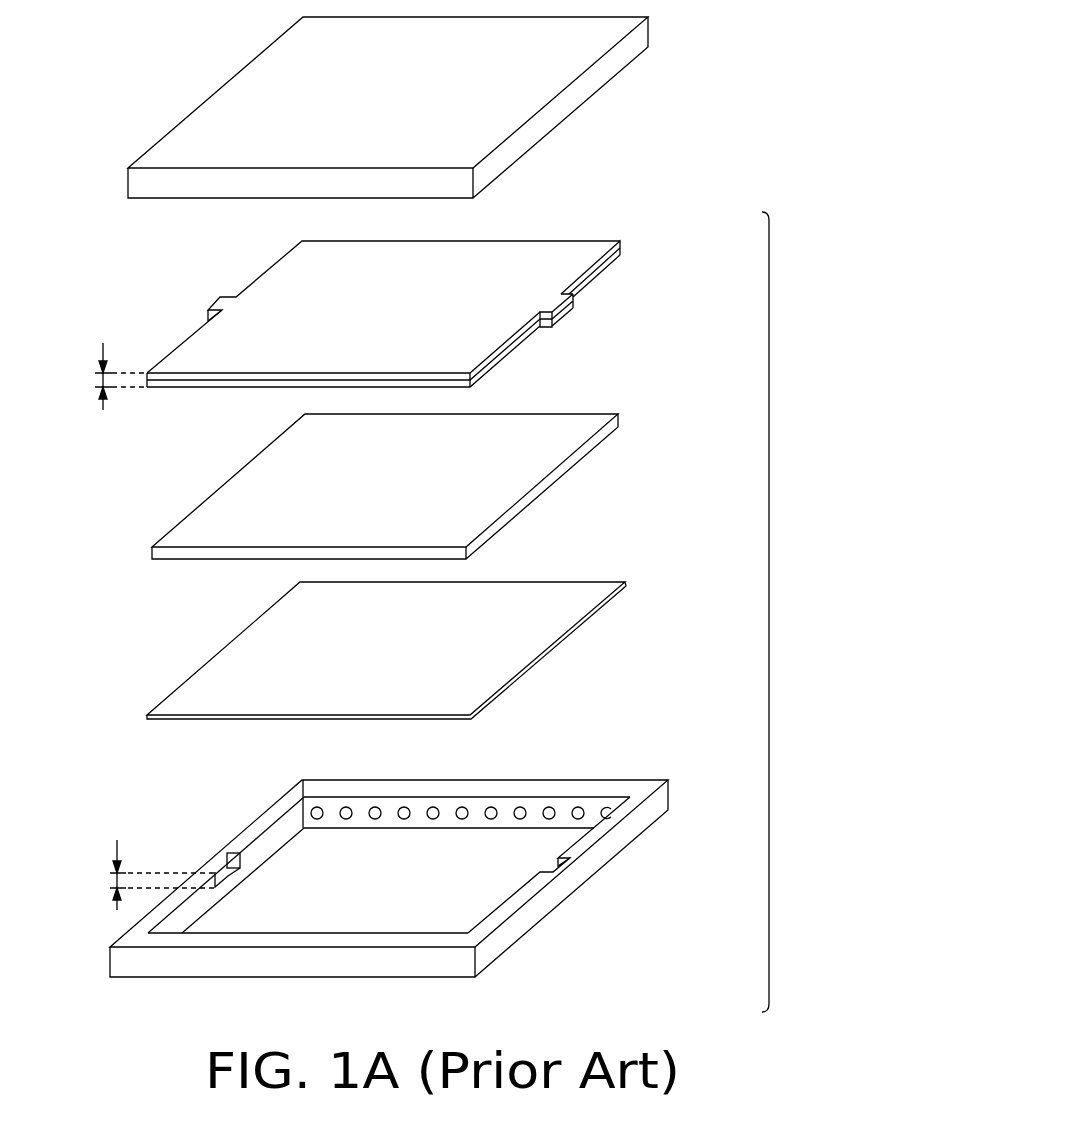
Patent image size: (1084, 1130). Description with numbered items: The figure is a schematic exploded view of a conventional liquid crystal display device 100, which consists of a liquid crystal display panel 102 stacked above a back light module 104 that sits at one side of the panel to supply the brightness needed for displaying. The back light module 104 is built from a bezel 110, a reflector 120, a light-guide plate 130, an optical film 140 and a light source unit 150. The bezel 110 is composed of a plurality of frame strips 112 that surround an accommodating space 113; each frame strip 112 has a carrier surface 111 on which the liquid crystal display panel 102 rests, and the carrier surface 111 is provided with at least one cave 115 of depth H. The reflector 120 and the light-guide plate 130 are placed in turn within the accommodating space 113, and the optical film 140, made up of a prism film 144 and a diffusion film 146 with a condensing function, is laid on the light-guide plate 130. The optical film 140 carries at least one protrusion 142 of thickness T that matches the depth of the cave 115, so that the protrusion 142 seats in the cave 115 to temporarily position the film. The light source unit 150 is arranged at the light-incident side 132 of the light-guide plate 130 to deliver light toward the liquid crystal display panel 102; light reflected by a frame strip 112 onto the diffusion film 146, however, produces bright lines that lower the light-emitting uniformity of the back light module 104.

The liquid crystal display device 100 is at (422, 873).
The liquid crystal display panel 102 is at (647, 32).
The back light module 104 is at (769, 608).
The bezel 110 is at (412, 861).
The carrier surface 111 is at (290, 794).
The frame strips 112 is at (423, 877).
The accommodating space 113 is at (364, 916).
The cave 115 is at (226, 866).
The reflector 120 is at (626, 583).
The light-guide plate 130 is at (423, 460).
The light-incident side 132 is at (575, 412).
The optical film 140 is at (415, 317).
The protrusion 142 is at (218, 306).
The prism film 144 is at (621, 244).
The diffusion film 146 is at (623, 252).
The light source unit 150 is at (419, 802).